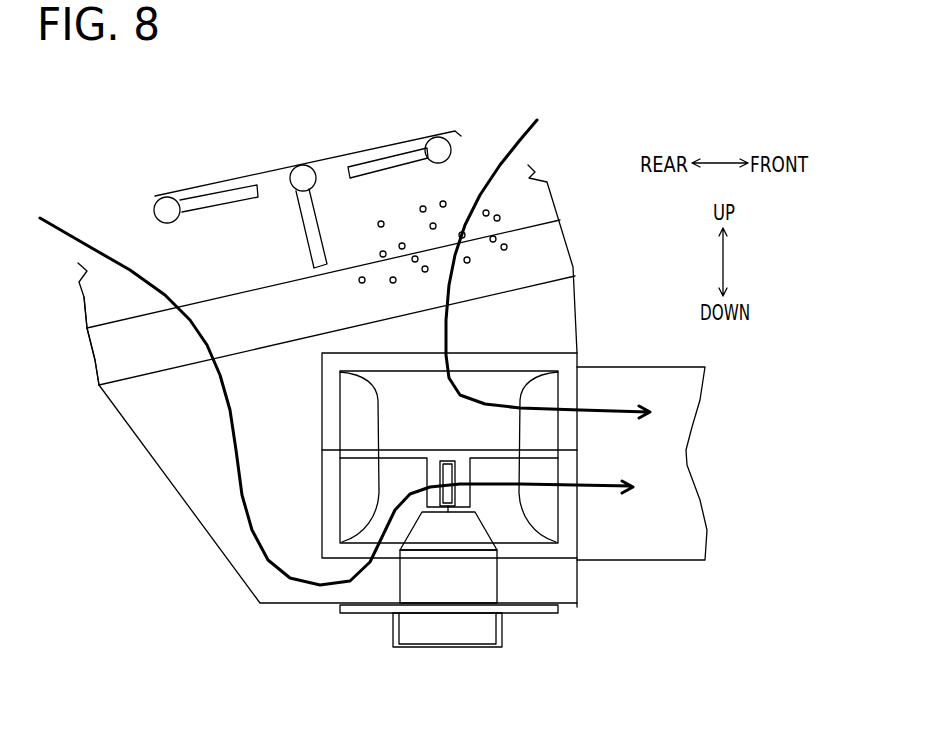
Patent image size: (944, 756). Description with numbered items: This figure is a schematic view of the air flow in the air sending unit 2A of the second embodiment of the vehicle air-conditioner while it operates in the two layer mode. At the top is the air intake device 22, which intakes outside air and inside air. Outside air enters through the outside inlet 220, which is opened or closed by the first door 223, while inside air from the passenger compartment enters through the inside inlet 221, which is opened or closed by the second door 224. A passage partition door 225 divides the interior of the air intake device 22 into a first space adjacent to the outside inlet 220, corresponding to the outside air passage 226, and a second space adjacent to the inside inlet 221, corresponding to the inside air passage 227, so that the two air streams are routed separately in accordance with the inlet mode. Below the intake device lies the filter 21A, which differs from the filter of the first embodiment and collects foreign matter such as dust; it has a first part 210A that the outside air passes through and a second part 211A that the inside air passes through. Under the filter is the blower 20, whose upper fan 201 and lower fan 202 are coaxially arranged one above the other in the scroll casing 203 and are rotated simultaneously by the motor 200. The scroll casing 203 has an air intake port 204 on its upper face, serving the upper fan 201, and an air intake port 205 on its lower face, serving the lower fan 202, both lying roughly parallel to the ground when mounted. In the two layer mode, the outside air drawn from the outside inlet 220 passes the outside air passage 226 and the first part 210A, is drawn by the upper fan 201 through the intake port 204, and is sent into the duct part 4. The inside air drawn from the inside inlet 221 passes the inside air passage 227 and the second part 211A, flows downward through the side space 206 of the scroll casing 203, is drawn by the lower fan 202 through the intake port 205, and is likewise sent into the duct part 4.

The air sending unit 2A is at (97, 483).
The duct part 4 is at (645, 562).
The blower 20 is at (355, 631).
The filter 21A is at (100, 358).
The air intake device 22 is at (323, 143).
The motor 200 is at (443, 630).
The upper fan 201 is at (553, 392).
The lower fan 202 is at (538, 523).
The scroll casing 203 is at (317, 523).
The air intake port 204 is at (487, 351).
The air intake port 205 is at (383, 563).
The side space 206 is at (235, 498).
The first part of the filter 210A is at (500, 275).
The second part of the filter 211A is at (178, 357).
The outside inlet 220 is at (532, 164).
The inside inlet 221 is at (134, 207).
The first door 223 is at (388, 166).
The second door 224 is at (220, 198).
The passage partition door 225 is at (293, 222).
The outside air passage 226 is at (453, 183).
The inside air passage 227 is at (205, 245).